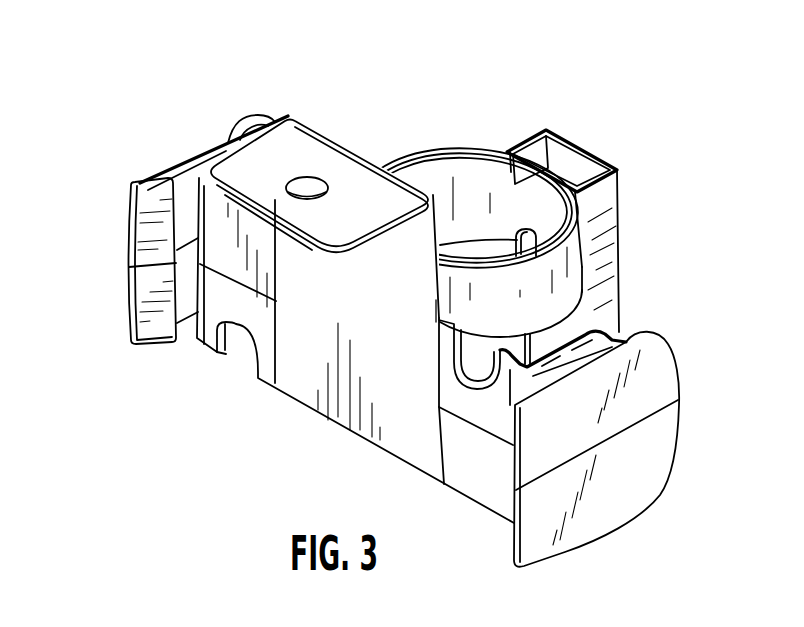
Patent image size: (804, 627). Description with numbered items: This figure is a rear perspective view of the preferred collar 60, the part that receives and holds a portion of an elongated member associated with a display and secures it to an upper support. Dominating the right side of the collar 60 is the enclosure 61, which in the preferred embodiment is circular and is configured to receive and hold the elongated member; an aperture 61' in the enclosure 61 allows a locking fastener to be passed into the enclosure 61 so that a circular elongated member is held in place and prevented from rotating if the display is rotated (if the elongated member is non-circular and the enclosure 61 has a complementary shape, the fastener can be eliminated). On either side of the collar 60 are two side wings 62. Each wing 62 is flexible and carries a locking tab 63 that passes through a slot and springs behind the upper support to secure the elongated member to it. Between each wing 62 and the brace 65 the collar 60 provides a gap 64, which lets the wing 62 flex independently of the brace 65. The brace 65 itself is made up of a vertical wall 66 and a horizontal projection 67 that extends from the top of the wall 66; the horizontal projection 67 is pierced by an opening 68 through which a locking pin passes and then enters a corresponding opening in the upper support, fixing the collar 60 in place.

The collar 60 is at (298, 424).
The enclosure 61 is at (468, 200).
The aperture 61' is at (581, 197).
The side wing 62 is at (127, 230).
The locking tab 63 is at (152, 180).
The gap 64 is at (217, 155).
The brace 65 is at (428, 292).
The vertical wall 66 is at (374, 283).
The horizontal projection 67 is at (267, 172).
The opening 68 is at (308, 178).